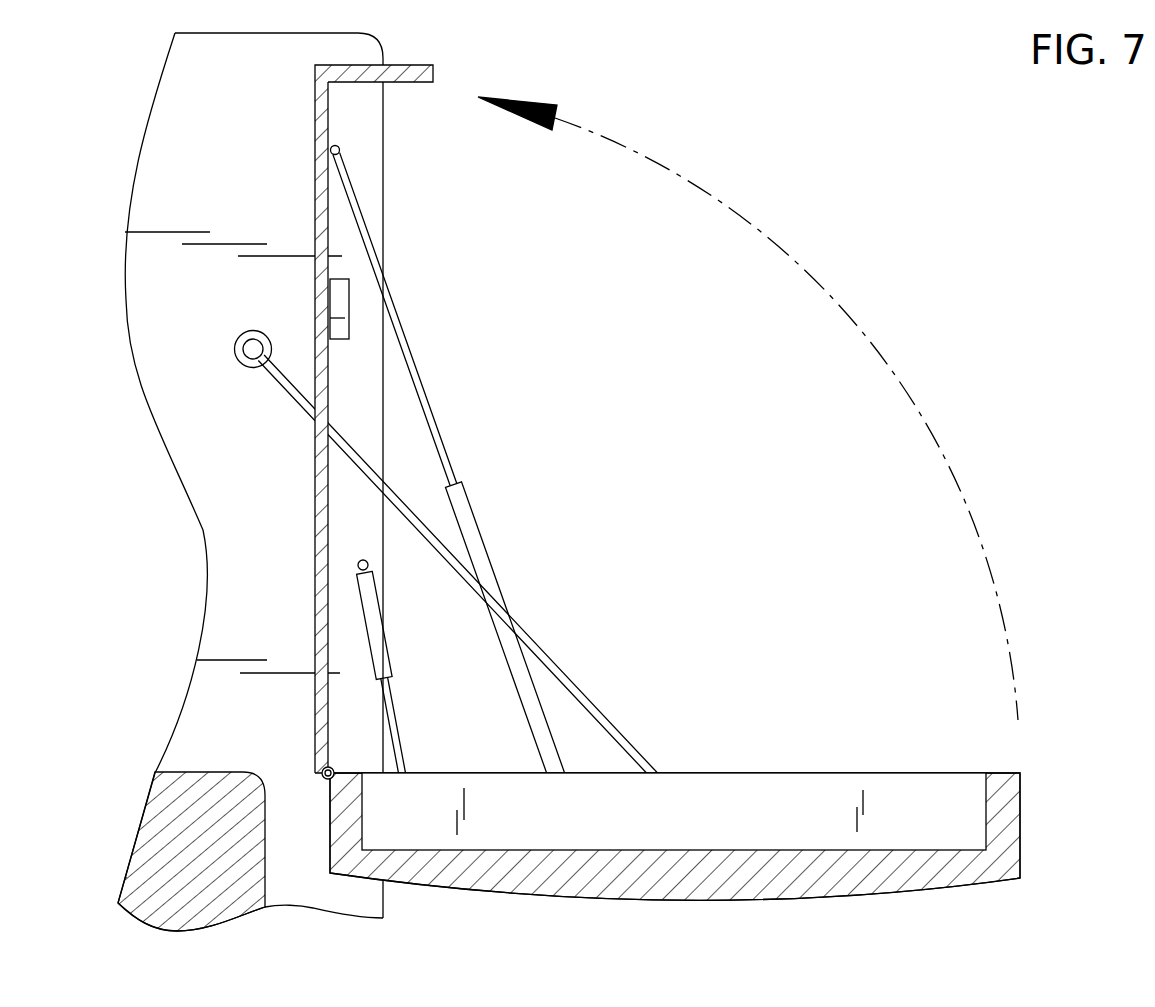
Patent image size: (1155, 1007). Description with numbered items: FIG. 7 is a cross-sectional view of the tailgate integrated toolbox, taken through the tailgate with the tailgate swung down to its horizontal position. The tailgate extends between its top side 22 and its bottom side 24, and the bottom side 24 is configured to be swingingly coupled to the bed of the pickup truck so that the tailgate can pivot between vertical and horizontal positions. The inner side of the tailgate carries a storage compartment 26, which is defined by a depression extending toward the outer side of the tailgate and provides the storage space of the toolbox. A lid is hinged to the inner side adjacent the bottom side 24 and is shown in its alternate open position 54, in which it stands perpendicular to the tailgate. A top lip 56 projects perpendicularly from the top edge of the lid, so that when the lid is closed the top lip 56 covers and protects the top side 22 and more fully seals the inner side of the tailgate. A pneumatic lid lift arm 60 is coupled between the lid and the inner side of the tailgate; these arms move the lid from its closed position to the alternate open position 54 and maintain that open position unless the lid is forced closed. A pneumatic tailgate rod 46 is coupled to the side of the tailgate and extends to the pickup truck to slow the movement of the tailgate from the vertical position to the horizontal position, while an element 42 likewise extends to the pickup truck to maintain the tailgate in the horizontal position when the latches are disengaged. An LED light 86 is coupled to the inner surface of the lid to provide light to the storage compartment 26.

The top side 22 is at (1020, 812).
The bottom side 24 is at (330, 837).
The storage compartment 26 is at (840, 803).
The link arm 42 is at (594, 696).
The pneumatic tailgate rods 46 is at (391, 651).
The alternate open position 54 is at (315, 148).
The top lip 56 is at (408, 77).
The pneumatic lid lift arms 60 is at (485, 538).
The LED lights 86 is at (350, 309).